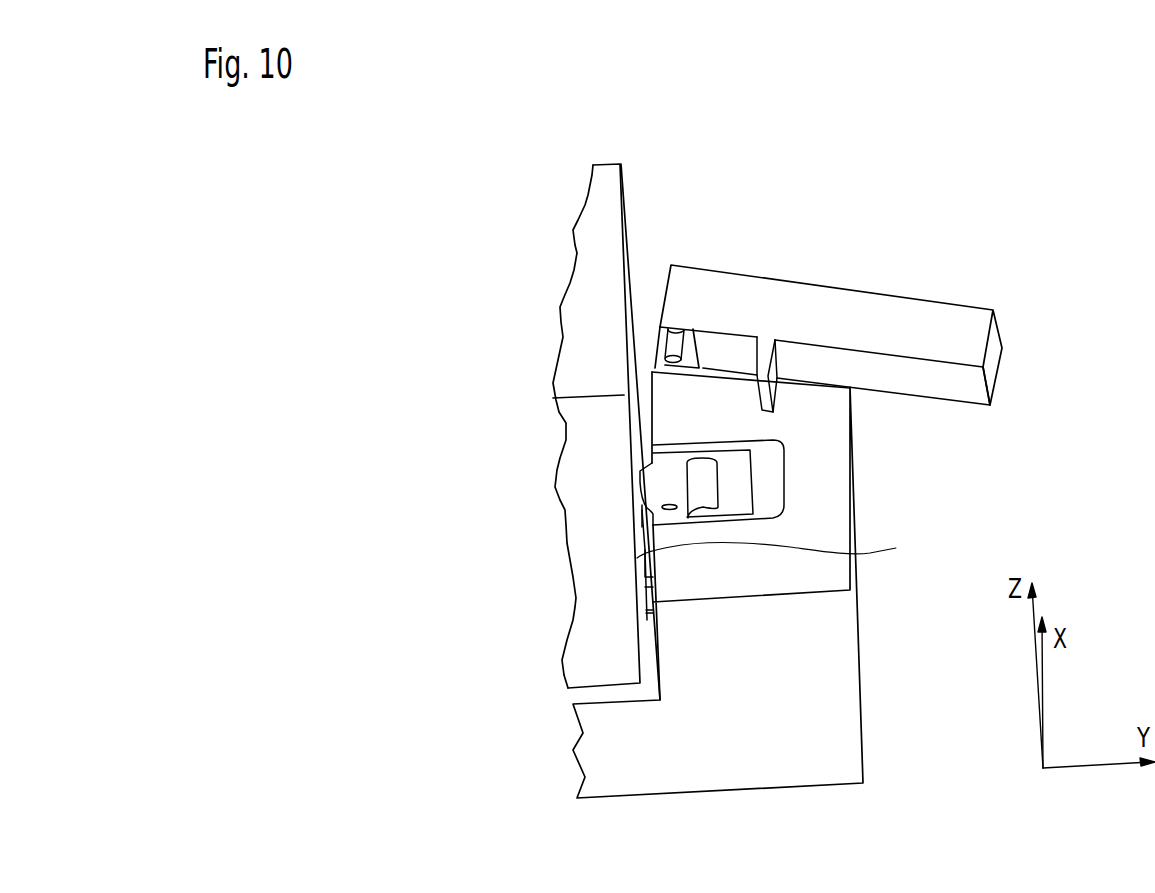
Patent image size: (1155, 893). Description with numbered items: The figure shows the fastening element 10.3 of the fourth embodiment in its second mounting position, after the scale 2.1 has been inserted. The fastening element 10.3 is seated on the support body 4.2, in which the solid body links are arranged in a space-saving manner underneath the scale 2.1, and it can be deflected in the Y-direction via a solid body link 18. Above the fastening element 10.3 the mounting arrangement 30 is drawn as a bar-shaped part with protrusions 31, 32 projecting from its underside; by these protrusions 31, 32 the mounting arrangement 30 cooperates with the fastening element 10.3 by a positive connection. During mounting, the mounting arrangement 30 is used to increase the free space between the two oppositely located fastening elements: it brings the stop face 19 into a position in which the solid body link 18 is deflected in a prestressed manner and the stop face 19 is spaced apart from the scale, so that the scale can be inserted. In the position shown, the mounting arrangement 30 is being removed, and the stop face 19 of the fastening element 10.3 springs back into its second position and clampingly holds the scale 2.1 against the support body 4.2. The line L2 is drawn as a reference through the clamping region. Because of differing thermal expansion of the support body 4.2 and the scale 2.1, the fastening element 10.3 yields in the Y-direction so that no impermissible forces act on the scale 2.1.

The scale 2.1 is at (577, 443).
The support body 4.2 is at (820, 697).
The fastening element 10.3 is at (650, 488).
The solid body link 18 is at (727, 442).
The stop face 19 is at (635, 529).
The mounting arrangement 30 is at (968, 317).
The protrusion 31 is at (674, 331).
The protrusion 32 is at (780, 374).
The line L2 is at (781, 547).